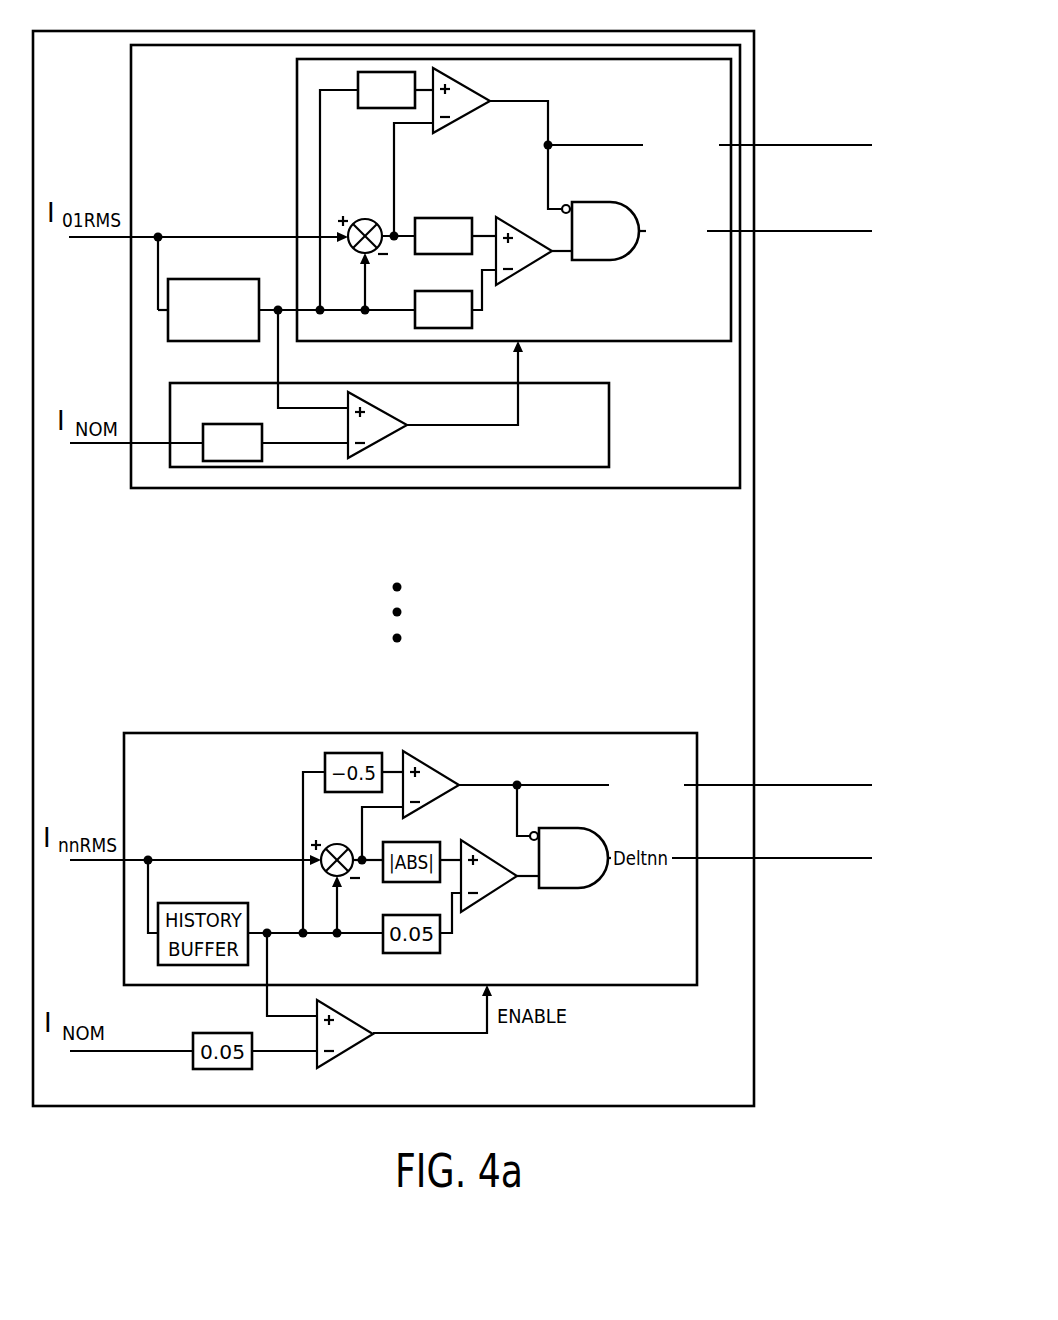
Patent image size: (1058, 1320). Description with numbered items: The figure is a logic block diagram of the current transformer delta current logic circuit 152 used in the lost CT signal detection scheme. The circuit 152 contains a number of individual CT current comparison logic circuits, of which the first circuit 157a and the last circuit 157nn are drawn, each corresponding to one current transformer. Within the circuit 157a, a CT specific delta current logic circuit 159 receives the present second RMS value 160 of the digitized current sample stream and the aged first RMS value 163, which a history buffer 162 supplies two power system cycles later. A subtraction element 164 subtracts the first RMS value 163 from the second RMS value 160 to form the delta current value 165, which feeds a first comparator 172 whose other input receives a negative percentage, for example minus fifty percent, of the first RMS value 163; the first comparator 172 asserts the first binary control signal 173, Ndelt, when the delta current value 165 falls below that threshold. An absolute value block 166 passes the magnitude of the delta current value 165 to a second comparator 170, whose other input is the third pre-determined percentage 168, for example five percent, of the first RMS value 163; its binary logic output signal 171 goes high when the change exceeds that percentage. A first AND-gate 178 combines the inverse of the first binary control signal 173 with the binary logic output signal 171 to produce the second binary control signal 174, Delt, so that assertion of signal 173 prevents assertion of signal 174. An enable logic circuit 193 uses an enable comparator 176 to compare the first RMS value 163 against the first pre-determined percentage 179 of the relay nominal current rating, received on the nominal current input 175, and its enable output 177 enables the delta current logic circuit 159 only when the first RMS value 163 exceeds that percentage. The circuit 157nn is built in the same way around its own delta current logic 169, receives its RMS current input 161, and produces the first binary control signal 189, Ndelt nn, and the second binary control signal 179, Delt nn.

The CT delta current logic circuit 152 is at (85, 67).
The CT current comparison logic circuit 157a is at (652, 490).
The CT current comparison logic circuit 157nn is at (604, 1003).
The CT specific delta current logic circuit 159 is at (297, 88).
The second RMS value 160 is at (190, 236).
The InnRMS input line 161 is at (200, 860).
The history buffer 162 is at (217, 279).
The first RMS value 163 is at (278, 364).
The subtractor 164 is at (365, 218).
The delta current value 165 is at (394, 158).
The absolute value block 166 is at (455, 218).
The third pre-determined percentage 168 is at (472, 318).
The delta current logic block nn 169 is at (200, 733).
The second comparator 170 is at (530, 227).
The binary logic output signal 171 is at (559, 268).
The first comparator 172 is at (468, 86).
The first binary control signal 173 is at (551, 117).
The second binary control signal 174 is at (790, 231).
The INOM input 175 is at (108, 445).
The enable comparator 176 is at (393, 436).
The enable signal line 177 is at (441, 425).
The first AND-gate 178 is at (595, 202).
The first pre-determined percentage 179 is at (240, 424).
The first binary control signal 189 is at (792, 785).
The enable logic circuit 193 is at (609, 425).